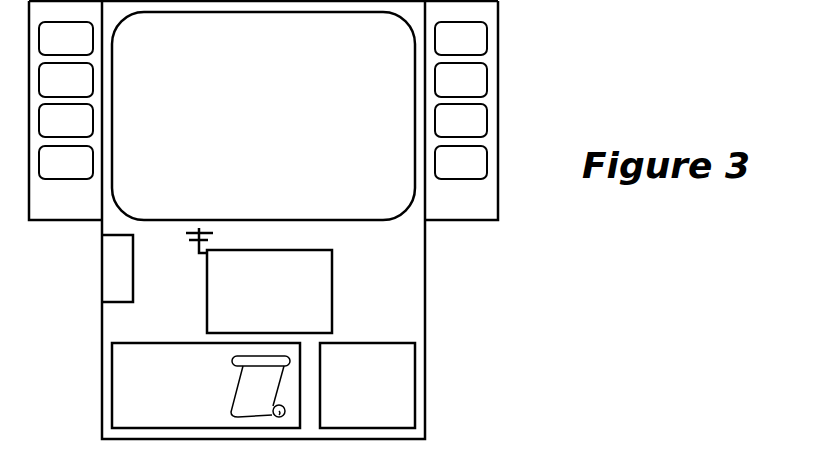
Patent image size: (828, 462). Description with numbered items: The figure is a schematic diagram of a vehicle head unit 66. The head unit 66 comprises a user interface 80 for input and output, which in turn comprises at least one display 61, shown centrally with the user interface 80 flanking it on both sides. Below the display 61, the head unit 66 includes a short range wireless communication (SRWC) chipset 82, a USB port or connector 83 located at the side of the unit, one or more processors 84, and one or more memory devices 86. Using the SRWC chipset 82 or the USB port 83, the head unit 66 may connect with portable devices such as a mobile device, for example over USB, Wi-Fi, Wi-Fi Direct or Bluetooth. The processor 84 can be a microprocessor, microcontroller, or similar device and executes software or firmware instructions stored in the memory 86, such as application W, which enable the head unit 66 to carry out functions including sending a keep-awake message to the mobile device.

The head unit 66 is at (457, 310).
The user interface 80 is at (498, 67).
The display 61 is at (362, 220).
The USB port 83 is at (101, 263).
The short range wireless communication chipset 82 is at (285, 250).
The memory device 86 is at (173, 343).
The processor 84 is at (378, 343).